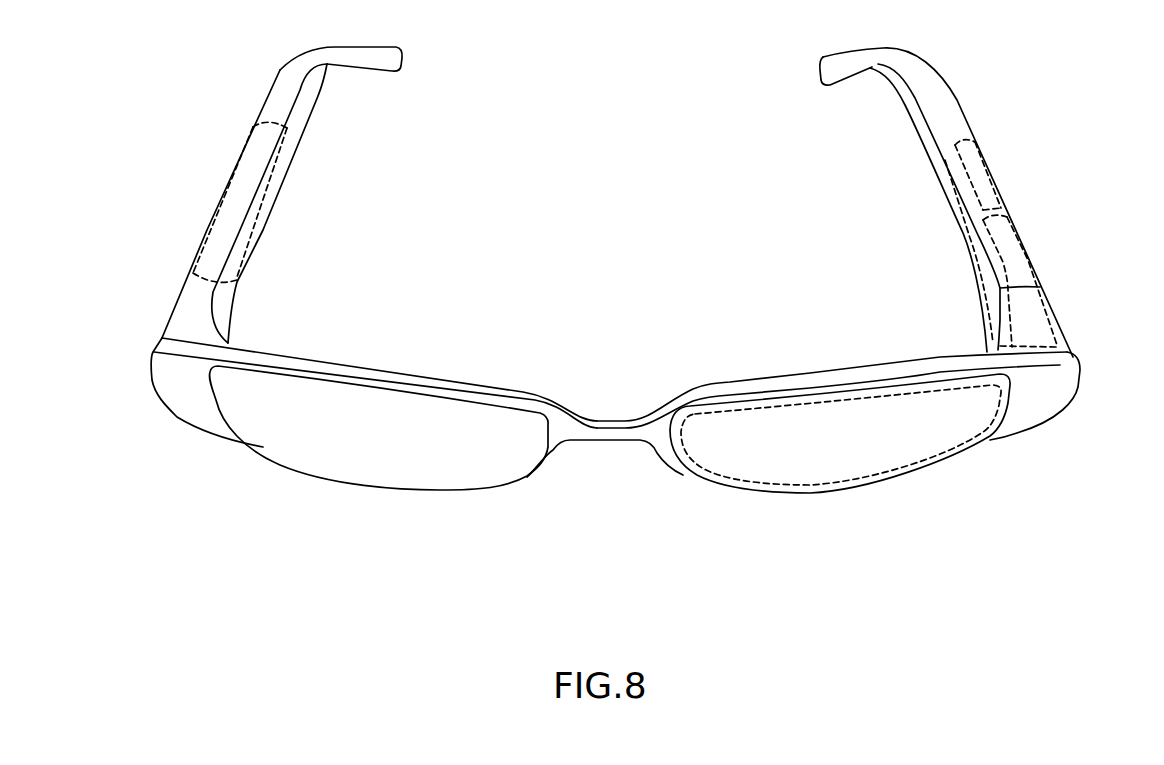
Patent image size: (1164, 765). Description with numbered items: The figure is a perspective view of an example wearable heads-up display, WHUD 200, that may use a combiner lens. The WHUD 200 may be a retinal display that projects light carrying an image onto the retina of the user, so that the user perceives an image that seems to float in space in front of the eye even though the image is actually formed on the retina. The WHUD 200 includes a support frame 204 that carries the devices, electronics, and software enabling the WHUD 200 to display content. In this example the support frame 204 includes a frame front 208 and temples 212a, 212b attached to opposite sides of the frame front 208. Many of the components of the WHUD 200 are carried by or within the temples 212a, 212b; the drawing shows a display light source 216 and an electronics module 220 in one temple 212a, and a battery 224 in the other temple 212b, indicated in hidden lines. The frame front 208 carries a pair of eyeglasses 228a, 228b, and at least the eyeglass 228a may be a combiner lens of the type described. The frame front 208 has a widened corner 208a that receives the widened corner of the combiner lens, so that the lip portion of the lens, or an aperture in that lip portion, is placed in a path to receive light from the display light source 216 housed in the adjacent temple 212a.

The WHUD 200 is at (620, 327).
The support frame 204 is at (403, 372).
The frame front 208 is at (712, 395).
The widened corner 208a is at (1040, 410).
The temple 212a is at (953, 123).
The temple 212b is at (275, 93).
The display light source 216 is at (1012, 250).
The electronics module 220 is at (982, 178).
The battery 224 is at (245, 183).
The eyeglass 228a is at (848, 472).
The eyeglass 228b is at (313, 473).